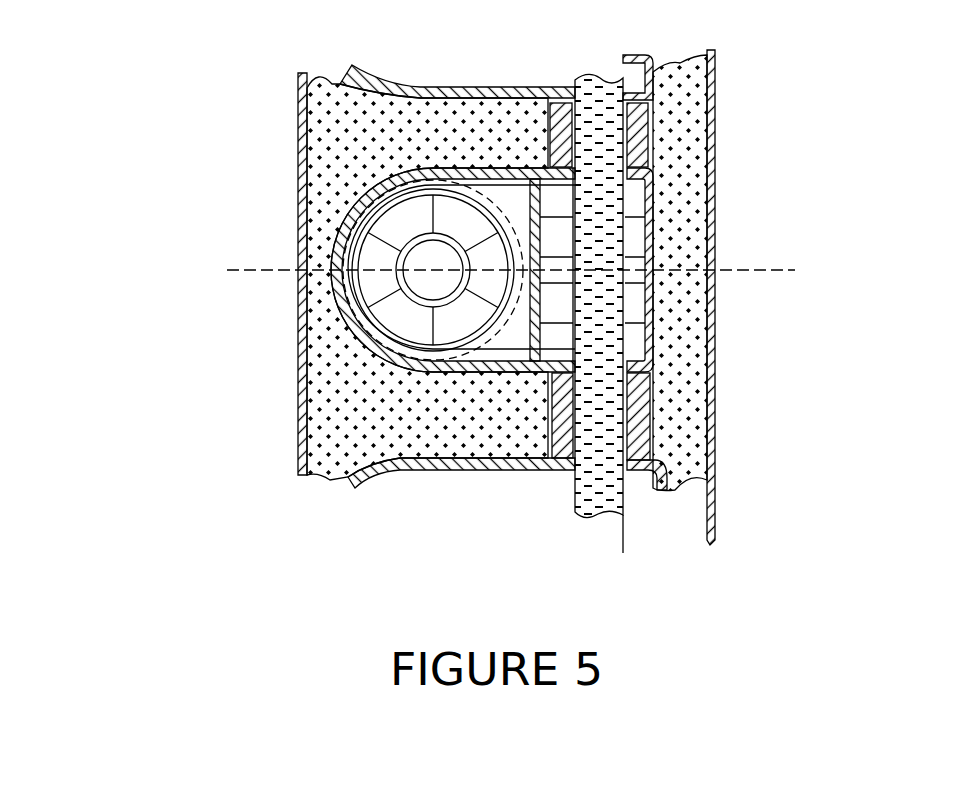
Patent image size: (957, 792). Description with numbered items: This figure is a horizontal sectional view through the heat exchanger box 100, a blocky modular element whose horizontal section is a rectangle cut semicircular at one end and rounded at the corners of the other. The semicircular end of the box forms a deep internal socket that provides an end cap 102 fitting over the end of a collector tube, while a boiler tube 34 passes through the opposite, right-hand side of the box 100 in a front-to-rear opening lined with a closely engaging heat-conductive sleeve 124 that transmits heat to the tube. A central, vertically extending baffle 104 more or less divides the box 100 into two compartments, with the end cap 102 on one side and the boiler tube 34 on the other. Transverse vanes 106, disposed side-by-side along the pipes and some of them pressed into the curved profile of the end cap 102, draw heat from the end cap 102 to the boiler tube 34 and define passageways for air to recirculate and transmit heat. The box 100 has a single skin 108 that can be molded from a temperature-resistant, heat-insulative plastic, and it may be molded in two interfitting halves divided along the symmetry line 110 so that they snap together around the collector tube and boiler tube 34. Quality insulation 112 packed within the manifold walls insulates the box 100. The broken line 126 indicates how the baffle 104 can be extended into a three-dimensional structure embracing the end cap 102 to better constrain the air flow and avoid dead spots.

The boiler tube 34 is at (602, 125).
The heat exchanger box 100 is at (127, 225).
The end cap 102 is at (510, 373).
The baffle 104 is at (515, 183).
The transverse vanes 106 is at (485, 190).
The skin 108 is at (443, 168).
The symmetry line 110 is at (240, 270).
The insulation 112 is at (340, 118).
The heat-conductive sleeve 124 is at (627, 340).
The broken line 126 is at (463, 185).